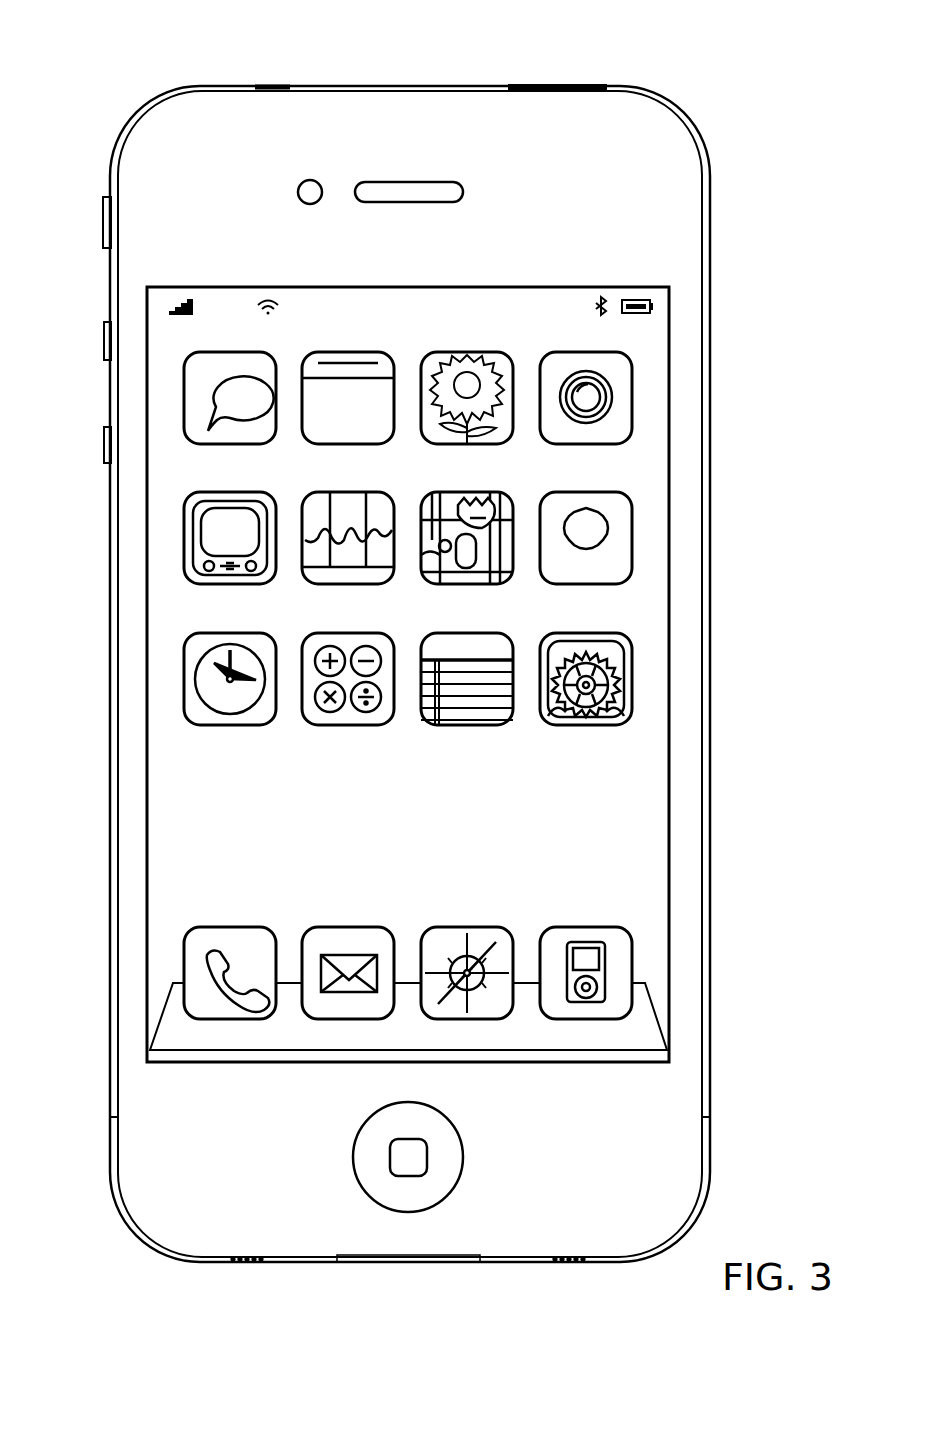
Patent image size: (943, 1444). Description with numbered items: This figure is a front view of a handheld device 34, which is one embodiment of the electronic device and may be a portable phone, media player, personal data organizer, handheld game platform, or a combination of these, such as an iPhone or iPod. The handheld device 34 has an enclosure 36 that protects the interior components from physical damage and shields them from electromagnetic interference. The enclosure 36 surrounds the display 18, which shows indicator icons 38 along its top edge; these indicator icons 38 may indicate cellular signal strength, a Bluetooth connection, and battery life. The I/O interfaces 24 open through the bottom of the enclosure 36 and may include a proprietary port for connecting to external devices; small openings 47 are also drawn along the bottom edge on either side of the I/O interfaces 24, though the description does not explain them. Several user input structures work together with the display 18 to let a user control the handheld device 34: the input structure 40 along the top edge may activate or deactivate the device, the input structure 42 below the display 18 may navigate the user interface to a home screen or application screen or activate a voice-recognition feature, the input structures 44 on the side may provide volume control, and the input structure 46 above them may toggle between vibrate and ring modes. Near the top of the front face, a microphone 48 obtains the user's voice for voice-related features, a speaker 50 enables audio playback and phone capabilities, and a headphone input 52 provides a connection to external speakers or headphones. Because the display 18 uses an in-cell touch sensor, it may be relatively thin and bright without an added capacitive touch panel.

The handheld device 34 is at (413, 662).
The enclosure 36 is at (712, 280).
The display 18 is at (674, 634).
The indicator icons 38 is at (193, 299).
The input structure 40 is at (541, 85).
The input structure 42 is at (463, 1160).
The input structures 44 is at (104, 328).
The input structure 46 is at (103, 232).
The speaker/microphone openings 47 is at (241, 1266).
The microphone 48 is at (428, 182).
The speaker 50 is at (272, 86).
The headphone input 52 is at (314, 181).
The I/O interfaces 24 is at (392, 1266).